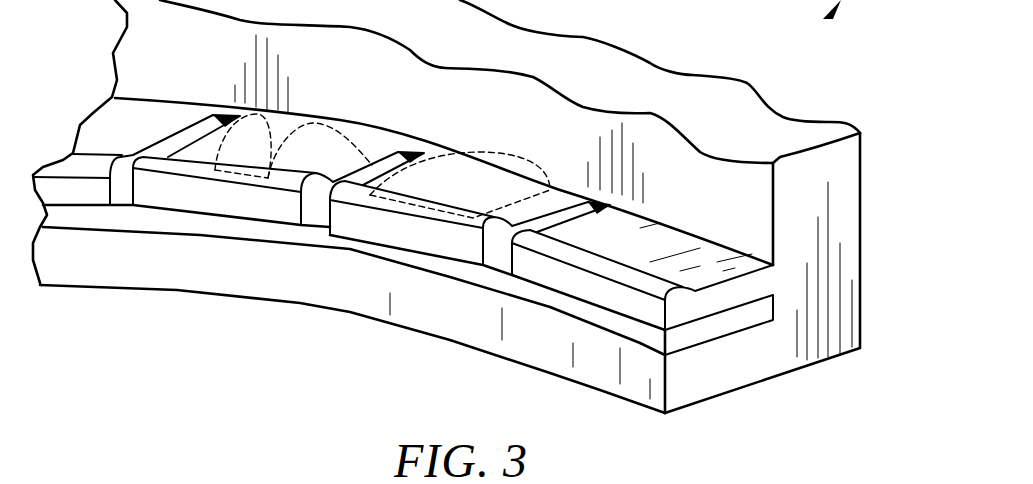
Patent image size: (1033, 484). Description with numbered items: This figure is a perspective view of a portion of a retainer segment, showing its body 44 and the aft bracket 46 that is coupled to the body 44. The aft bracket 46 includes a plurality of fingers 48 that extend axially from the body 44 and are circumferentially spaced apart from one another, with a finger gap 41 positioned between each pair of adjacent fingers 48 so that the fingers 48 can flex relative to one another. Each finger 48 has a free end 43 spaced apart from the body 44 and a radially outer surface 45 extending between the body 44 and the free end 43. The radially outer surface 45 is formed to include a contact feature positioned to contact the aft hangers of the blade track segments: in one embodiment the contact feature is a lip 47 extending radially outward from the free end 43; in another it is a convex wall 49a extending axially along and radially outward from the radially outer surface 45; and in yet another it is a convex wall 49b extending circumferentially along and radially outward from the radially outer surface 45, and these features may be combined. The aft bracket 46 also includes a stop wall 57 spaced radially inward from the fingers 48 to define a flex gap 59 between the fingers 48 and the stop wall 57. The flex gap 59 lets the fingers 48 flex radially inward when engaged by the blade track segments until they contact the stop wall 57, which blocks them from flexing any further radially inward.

The finger gap 41 is at (499, 264).
The free end 43 is at (559, 274).
The body 44 is at (650, 66).
The radially outer surface 45 is at (700, 282).
The aft bracket 46 is at (802, 250).
The lip 47 is at (633, 280).
The fingers 48 is at (748, 290).
The convex wall 49a is at (215, 171).
The convex wall 49b is at (428, 211).
The stop wall 57 is at (290, 284).
The flex gap 59 is at (359, 250).